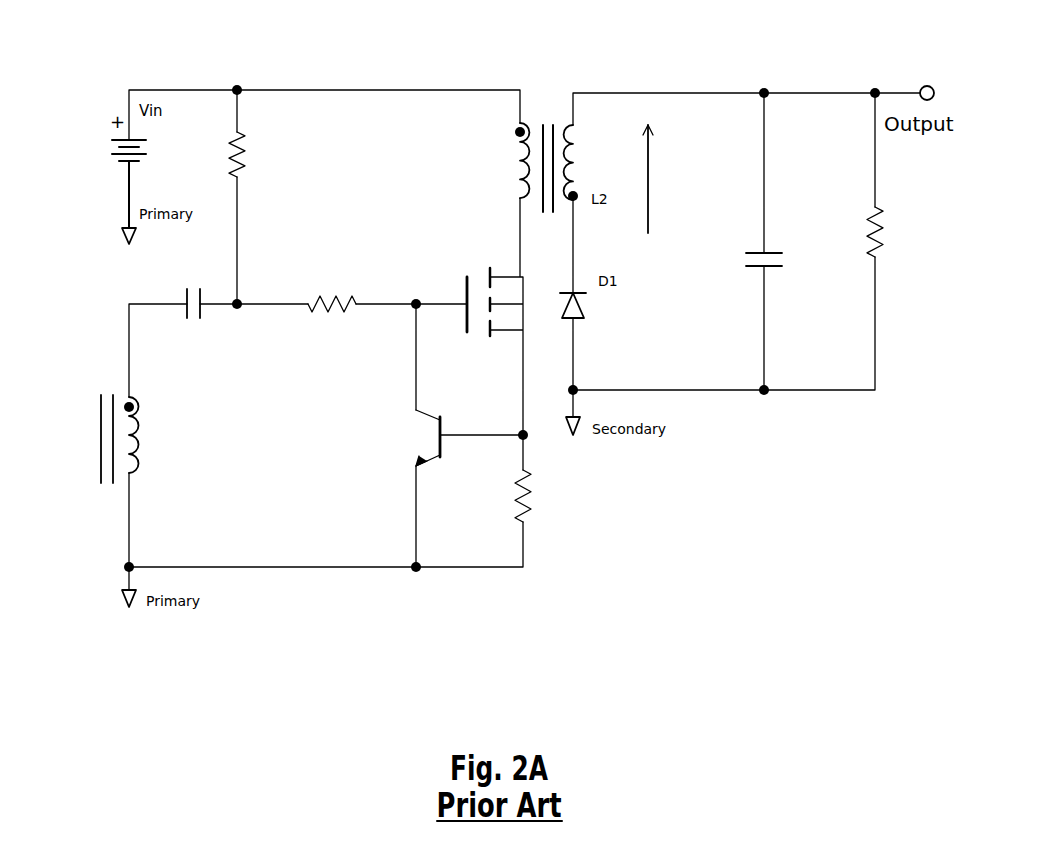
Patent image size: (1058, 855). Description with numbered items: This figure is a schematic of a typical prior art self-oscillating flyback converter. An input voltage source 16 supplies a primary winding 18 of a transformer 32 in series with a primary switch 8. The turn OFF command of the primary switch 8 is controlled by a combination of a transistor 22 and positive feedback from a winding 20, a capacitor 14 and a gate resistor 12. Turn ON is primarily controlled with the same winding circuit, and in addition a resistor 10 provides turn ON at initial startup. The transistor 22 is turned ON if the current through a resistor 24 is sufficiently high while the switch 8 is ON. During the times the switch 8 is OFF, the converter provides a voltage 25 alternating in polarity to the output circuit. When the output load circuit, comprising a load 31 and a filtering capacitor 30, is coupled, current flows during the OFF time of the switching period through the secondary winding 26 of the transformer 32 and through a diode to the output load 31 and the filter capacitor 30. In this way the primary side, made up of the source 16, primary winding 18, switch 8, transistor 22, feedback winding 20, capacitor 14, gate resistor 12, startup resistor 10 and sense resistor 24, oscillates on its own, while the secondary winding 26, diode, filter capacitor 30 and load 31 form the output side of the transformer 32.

The primary switch 8 is at (473, 257).
The resistor 10 is at (253, 155).
The gate resistor 12 is at (337, 318).
The capacitor 14 is at (210, 318).
The input voltage source 16 is at (102, 157).
The primary winding 18 is at (508, 175).
The winding 20 is at (145, 472).
The transistor 22 is at (412, 435).
The resistor 24 is at (533, 508).
The voltage 25 is at (650, 175).
The secondary winding 26 is at (583, 143).
The filtering capacitor 30 is at (783, 273).
The load 31 is at (887, 252).
The transformer 32 is at (548, 113).